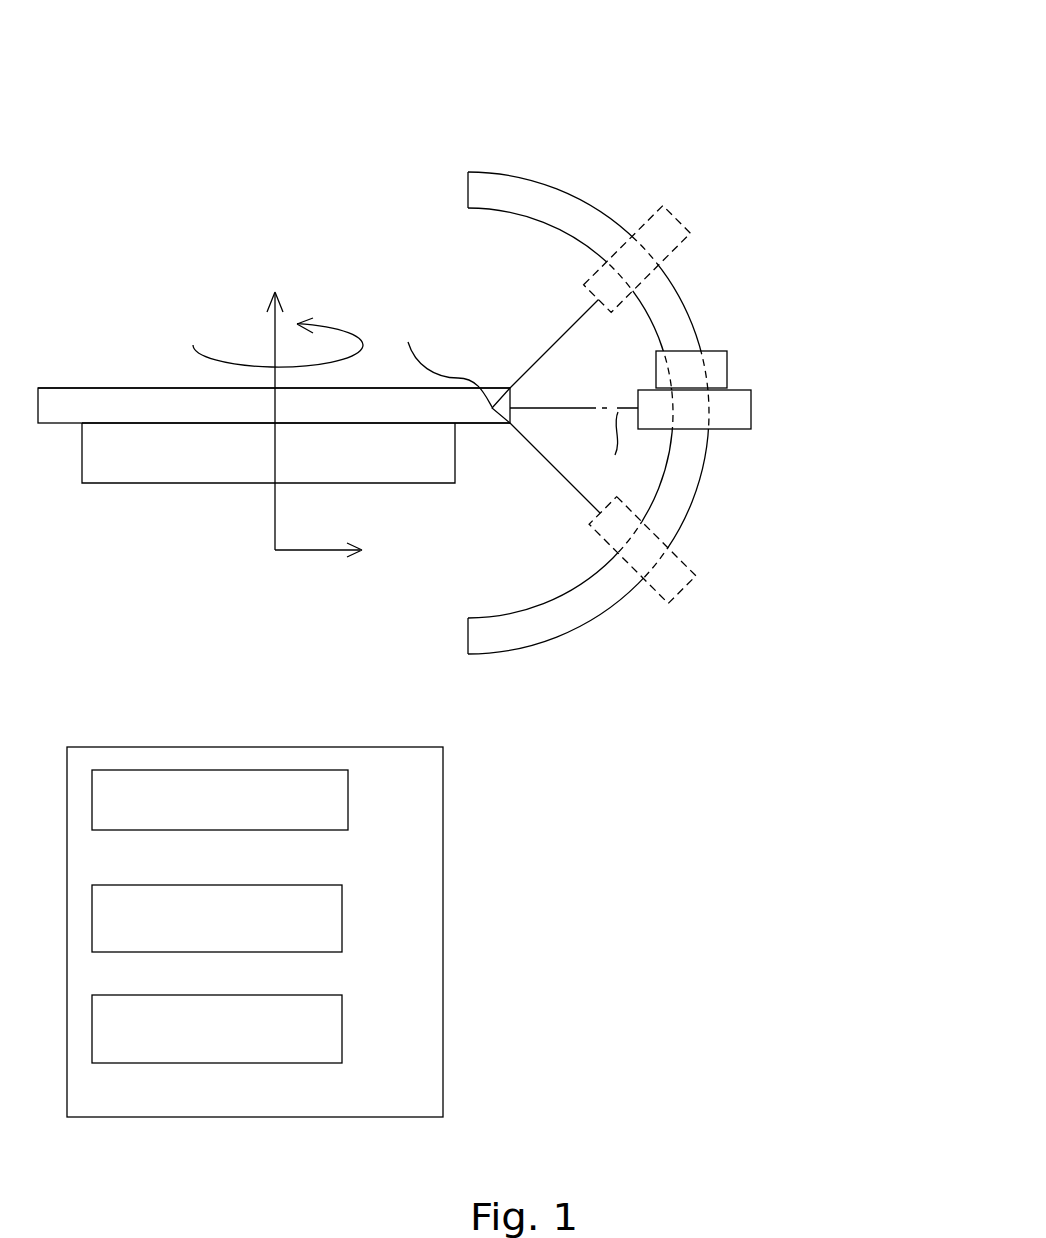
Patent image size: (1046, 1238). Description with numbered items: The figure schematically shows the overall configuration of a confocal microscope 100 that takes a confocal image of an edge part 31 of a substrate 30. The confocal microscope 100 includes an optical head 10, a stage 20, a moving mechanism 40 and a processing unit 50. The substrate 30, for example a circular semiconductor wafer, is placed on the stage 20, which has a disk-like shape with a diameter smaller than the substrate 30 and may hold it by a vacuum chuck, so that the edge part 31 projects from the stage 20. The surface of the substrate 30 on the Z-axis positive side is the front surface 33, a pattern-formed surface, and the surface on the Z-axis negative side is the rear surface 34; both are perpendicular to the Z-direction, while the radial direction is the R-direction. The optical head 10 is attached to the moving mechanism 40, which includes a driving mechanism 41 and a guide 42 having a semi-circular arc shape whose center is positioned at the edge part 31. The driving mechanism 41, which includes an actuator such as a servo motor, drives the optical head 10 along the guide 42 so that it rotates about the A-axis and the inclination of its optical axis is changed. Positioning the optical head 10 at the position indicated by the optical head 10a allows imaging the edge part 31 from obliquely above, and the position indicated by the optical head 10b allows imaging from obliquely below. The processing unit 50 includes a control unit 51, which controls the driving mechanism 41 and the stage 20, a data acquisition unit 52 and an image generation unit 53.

The confocal microscope 100 is at (55, 33).
The optical head 10 is at (738, 404).
The optical head (obliquely upper position) 10a is at (646, 222).
The optical head (obliquely lower position) 10b is at (687, 567).
The stage 20 is at (133, 478).
The substrate 30 is at (65, 392).
The edge part 31 is at (480, 438).
The front surface 33 is at (127, 388).
The rear surface 34 is at (210, 423).
The moving mechanism 40 is at (670, 413).
The driving mechanism 41 is at (727, 362).
The guide 42 is at (690, 330).
The processing unit 50 is at (160, 746).
The control unit 51 is at (350, 798).
The data acquisition unit 52 is at (343, 915).
The image generation unit 53 is at (343, 1026).